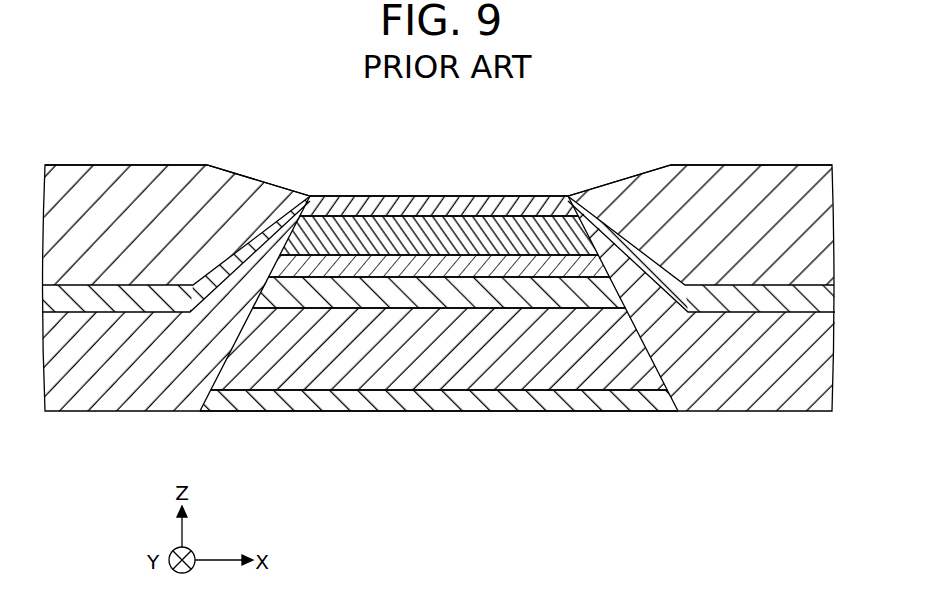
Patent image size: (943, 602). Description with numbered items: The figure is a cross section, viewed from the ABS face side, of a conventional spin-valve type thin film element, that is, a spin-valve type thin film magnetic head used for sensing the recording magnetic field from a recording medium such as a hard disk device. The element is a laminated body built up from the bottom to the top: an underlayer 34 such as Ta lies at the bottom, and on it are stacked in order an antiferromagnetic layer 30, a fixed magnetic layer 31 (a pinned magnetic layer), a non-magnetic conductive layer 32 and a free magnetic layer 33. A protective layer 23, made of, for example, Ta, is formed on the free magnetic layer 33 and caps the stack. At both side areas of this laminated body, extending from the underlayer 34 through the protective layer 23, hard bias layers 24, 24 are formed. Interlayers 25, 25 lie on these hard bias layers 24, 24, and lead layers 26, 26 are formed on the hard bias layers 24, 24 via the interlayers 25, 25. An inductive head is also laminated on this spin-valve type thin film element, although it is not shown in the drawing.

The protective layer 23 is at (328, 212).
The hard bias layer 24 is at (132, 373).
The interlayer 25 is at (73, 293).
The lead layer 26 is at (153, 208).
The antiferromagnetic layer 30 is at (498, 352).
The fixed magnetic layer 31 is at (537, 287).
The non-magnetic conductive layer 32 is at (460, 259).
The free magnetic layer 33 is at (383, 235).
The underlayer 34 is at (353, 400).